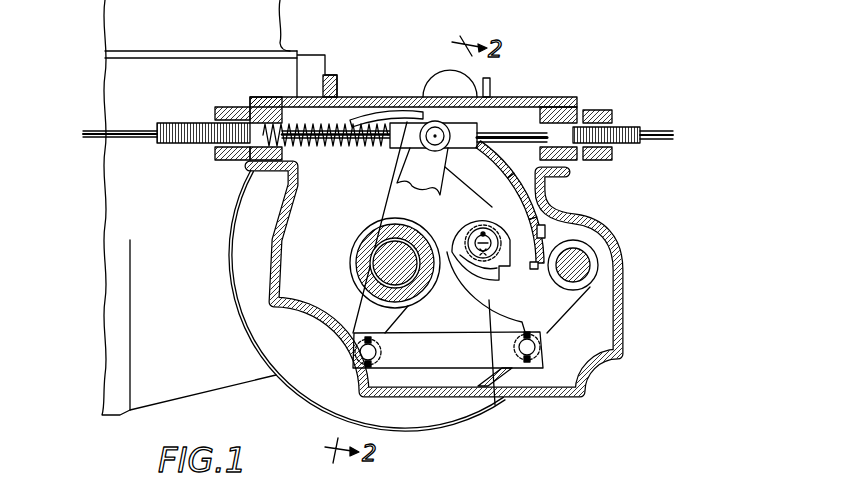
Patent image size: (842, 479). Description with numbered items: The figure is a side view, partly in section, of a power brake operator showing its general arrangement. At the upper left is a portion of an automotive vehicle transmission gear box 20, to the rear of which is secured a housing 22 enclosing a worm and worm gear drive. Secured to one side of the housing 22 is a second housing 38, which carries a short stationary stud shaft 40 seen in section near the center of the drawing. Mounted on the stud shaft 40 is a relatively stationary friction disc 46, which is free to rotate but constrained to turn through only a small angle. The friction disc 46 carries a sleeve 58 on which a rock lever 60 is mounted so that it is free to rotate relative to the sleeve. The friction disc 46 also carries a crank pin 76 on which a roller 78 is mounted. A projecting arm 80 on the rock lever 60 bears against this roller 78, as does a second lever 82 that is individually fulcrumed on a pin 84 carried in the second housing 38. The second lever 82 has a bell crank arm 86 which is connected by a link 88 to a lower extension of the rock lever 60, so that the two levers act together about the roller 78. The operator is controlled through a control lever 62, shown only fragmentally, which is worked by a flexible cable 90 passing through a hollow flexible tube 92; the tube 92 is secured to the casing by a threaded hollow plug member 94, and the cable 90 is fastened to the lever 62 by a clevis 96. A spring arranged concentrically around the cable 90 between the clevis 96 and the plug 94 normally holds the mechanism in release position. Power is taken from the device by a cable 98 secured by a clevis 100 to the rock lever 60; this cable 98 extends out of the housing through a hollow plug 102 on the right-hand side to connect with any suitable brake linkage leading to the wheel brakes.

The transmission gear box 20 is at (265, 28).
The housing 22 is at (357, 97).
The second housing 38 is at (625, 315).
The stationary stud shaft 40 is at (373, 268).
The friction disc 46 is at (513, 212).
The sleeve 58 is at (360, 283).
The rock lever 60 is at (387, 210).
The control lever 62 is at (412, 172).
The crank pin 76 is at (490, 243).
The roller 78 is at (507, 255).
The projecting arm 80 is at (540, 182).
The second lever 82 is at (495, 405).
The pin 84 is at (580, 268).
The bell crank arm 86 is at (547, 333).
The link 88 is at (433, 357).
The flexible cable 90 is at (113, 141).
The hollow flexible tube 92 is at (180, 138).
The threaded hollow plug member 94 is at (250, 160).
The clevis 96 is at (400, 127).
The cable 98 is at (667, 133).
The clevis 100 is at (493, 133).
The hollow plug 102 is at (577, 100).